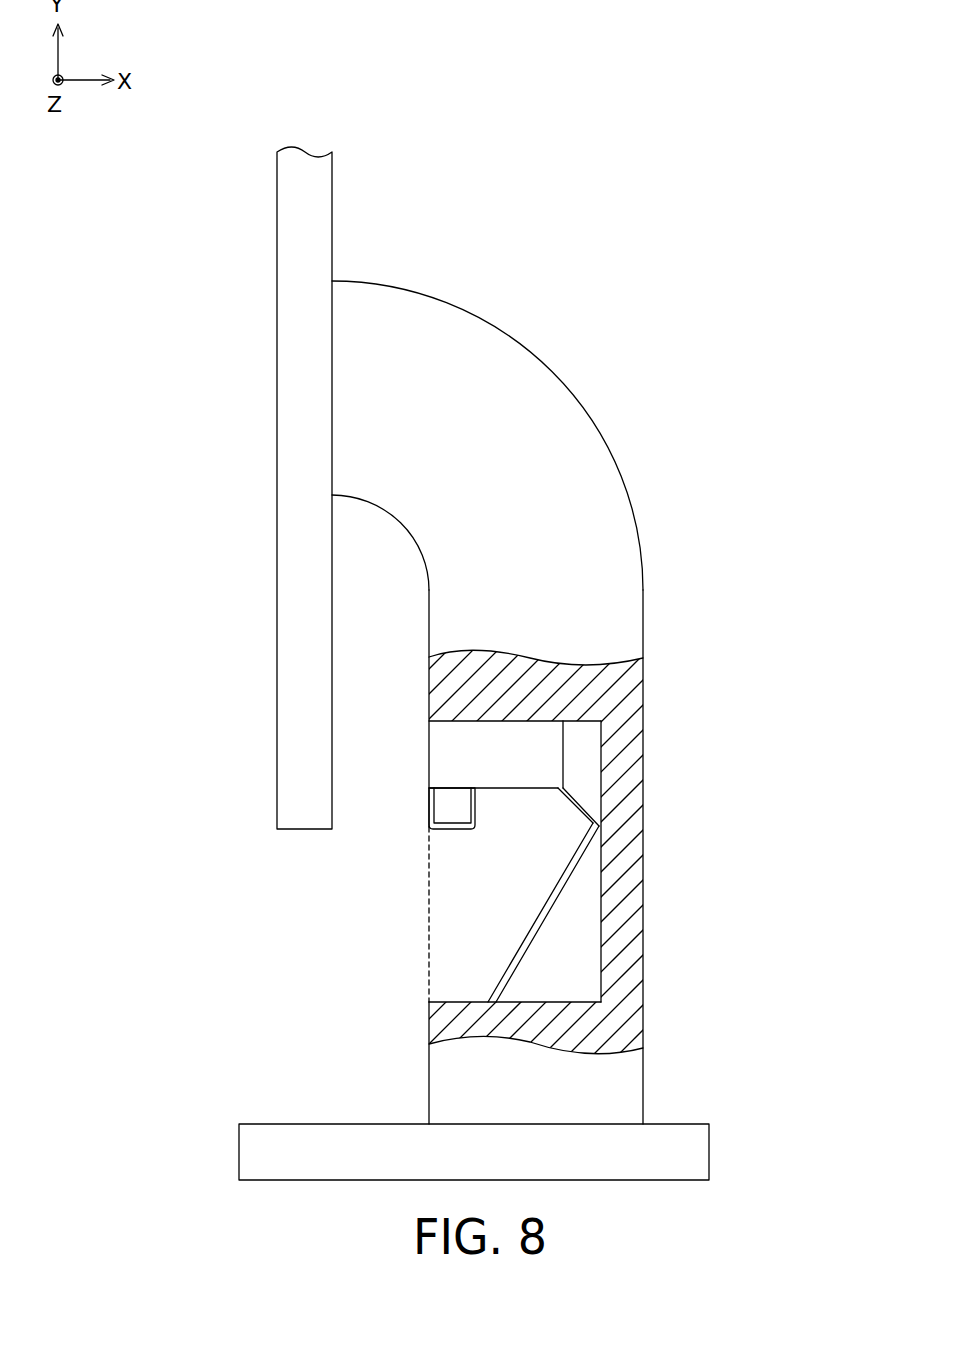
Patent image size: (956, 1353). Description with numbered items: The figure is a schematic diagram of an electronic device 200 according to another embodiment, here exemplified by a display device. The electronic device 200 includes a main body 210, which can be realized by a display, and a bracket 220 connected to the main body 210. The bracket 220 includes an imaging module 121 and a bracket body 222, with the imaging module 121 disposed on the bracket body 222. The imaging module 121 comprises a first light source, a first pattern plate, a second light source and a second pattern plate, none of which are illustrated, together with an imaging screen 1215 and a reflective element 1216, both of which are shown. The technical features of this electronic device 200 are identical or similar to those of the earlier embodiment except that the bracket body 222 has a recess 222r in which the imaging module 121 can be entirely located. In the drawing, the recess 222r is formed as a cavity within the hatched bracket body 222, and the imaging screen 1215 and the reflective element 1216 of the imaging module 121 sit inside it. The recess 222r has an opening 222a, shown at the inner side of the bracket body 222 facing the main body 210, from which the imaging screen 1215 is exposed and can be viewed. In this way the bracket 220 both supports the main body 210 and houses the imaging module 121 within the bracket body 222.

The electronic device 200 is at (713, 163).
The main body 210 is at (277, 191).
The bracket 220 is at (552, 370).
The bracket body 222 is at (595, 602).
The opening 222a is at (429, 880).
The recess 222r is at (483, 907).
The imaging module 121 is at (578, 763).
The imaging screen 1215 is at (545, 913).
The reflective element 1216 is at (572, 803).